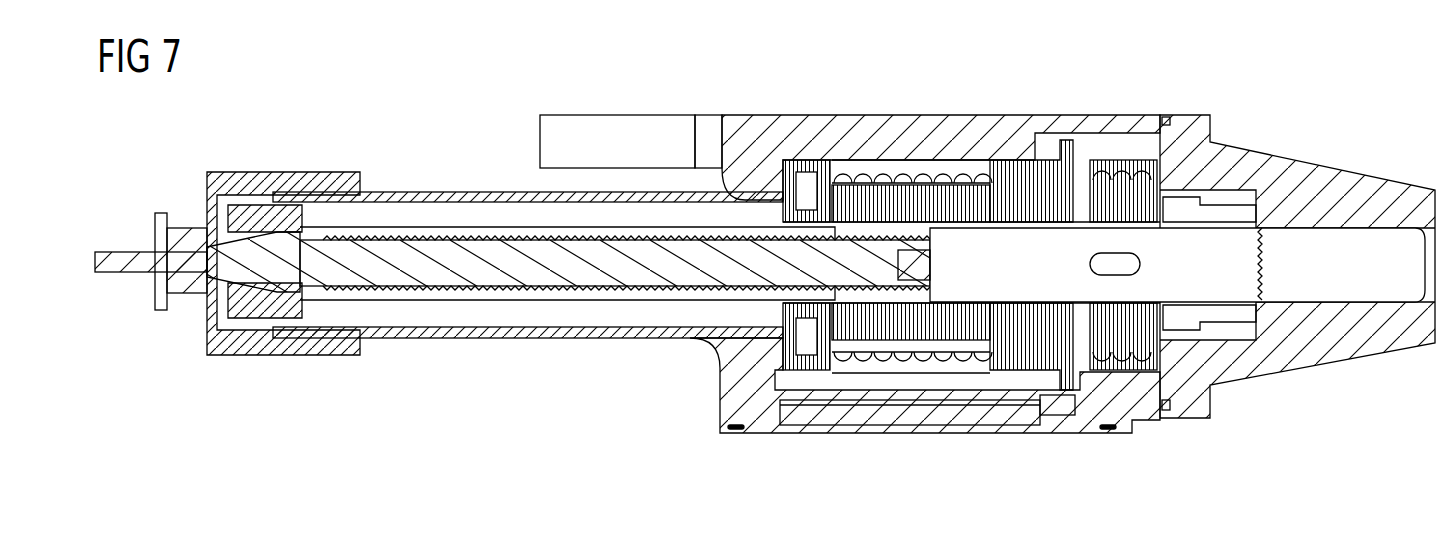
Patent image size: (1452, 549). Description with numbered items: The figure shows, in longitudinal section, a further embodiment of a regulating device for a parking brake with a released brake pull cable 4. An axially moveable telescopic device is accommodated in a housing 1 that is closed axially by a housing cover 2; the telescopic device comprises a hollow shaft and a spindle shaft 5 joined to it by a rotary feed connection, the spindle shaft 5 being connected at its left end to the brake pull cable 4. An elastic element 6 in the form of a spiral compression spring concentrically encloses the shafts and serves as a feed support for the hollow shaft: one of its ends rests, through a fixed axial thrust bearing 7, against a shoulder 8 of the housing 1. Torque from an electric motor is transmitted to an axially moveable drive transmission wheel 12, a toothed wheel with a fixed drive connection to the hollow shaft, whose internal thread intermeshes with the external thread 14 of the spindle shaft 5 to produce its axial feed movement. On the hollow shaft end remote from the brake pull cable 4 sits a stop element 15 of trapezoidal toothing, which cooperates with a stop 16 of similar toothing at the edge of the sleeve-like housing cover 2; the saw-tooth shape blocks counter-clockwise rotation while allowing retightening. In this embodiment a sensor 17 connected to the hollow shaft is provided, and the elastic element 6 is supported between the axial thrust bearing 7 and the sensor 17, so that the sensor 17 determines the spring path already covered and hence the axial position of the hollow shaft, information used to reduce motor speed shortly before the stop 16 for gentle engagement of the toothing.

The housing 1 is at (730, 113).
The housing cover 2 is at (1335, 165).
The brake pull cable 4 is at (122, 268).
The spindle shaft 5 is at (405, 260).
The elastic element 6 is at (882, 158).
The fixed axial thrust bearing 7 is at (795, 158).
The shoulder 8 is at (780, 350).
The drive transmission wheel 12 is at (1140, 372).
The external thread 14 is at (488, 287).
The stop element 15 is at (1255, 265).
The stop 16 is at (1268, 248).
The sensor 17 is at (1010, 158).